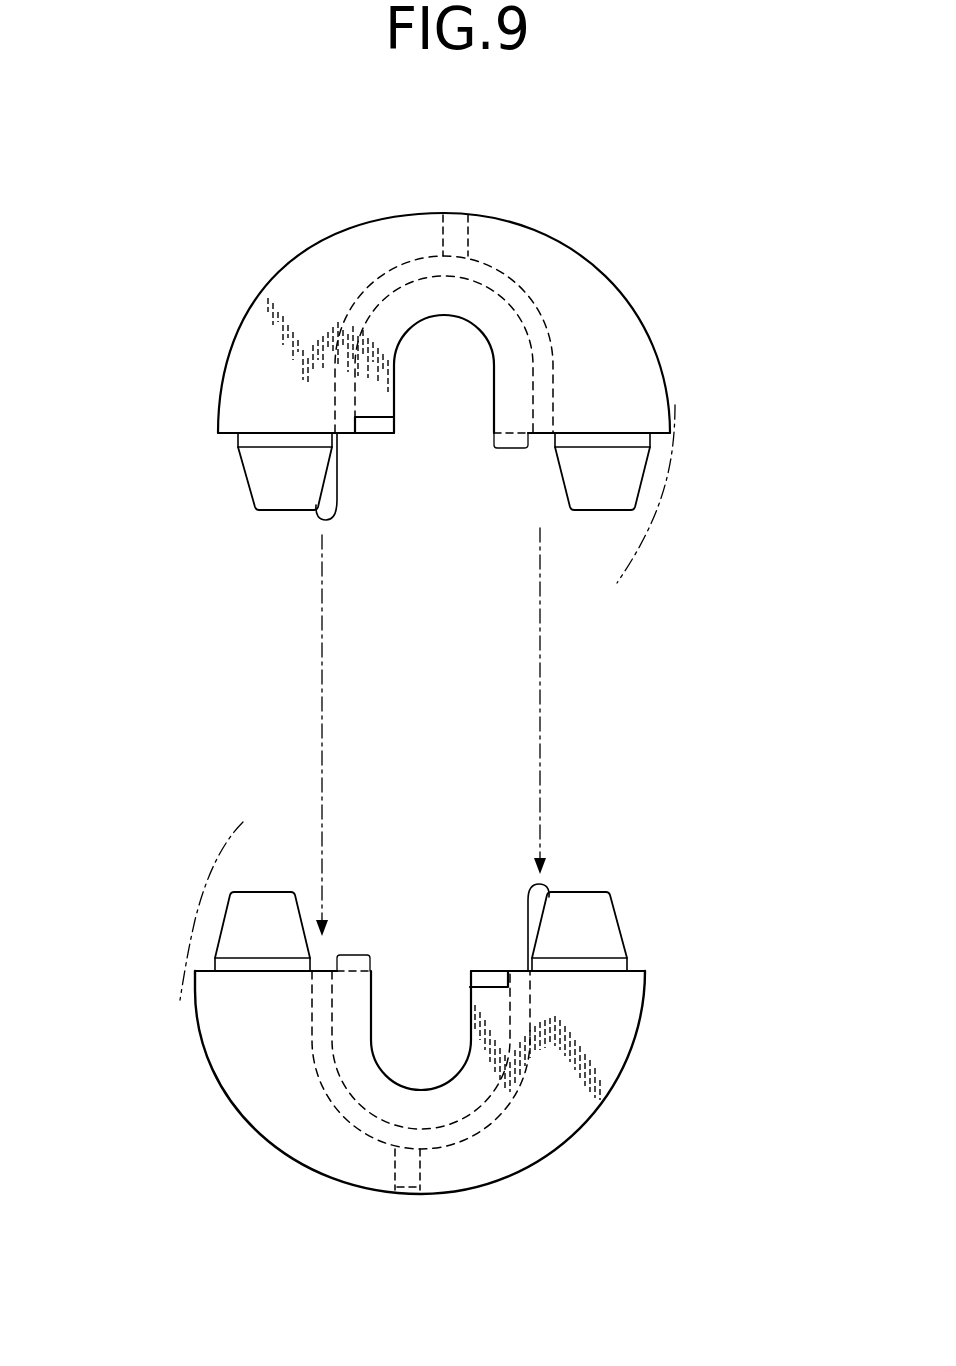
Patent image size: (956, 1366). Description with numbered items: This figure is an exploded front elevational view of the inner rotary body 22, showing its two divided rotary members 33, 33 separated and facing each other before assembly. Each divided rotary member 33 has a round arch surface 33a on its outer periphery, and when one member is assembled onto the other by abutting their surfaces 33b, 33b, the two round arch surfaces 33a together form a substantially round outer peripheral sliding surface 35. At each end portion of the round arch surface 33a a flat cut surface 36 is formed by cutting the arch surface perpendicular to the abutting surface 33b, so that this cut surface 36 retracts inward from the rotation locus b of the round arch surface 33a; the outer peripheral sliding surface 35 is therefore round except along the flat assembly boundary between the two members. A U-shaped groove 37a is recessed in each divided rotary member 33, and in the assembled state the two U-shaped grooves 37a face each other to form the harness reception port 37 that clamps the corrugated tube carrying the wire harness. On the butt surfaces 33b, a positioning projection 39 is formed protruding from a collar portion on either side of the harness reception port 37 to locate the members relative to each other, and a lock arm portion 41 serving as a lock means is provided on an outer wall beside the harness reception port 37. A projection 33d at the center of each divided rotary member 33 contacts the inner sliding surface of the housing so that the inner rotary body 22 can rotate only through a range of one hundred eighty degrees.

The inner rotary body 22 is at (110, 268).
The divided rotary member 33 is at (623, 362).
The round arch surface 33a is at (578, 249).
The abutting surface 33b is at (610, 437).
The projection 33d is at (485, 213).
The outer peripheral sliding surface 35 is at (541, 1163).
The cut surface 36 is at (218, 408).
The harness reception port 37 is at (376, 1039).
The U-shaped groove 37a is at (406, 327).
The positioning projection 39 is at (268, 510).
The lock arm portion 41 is at (340, 490).
The rotation locus b is at (650, 543).